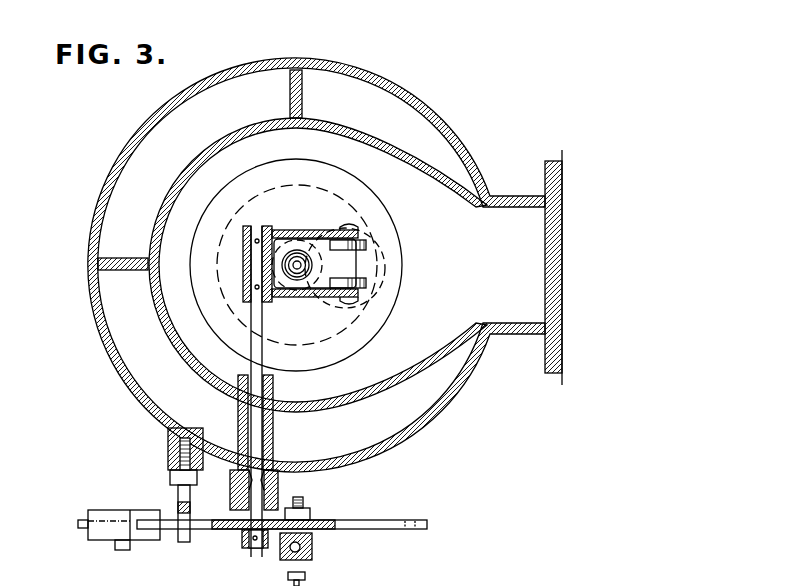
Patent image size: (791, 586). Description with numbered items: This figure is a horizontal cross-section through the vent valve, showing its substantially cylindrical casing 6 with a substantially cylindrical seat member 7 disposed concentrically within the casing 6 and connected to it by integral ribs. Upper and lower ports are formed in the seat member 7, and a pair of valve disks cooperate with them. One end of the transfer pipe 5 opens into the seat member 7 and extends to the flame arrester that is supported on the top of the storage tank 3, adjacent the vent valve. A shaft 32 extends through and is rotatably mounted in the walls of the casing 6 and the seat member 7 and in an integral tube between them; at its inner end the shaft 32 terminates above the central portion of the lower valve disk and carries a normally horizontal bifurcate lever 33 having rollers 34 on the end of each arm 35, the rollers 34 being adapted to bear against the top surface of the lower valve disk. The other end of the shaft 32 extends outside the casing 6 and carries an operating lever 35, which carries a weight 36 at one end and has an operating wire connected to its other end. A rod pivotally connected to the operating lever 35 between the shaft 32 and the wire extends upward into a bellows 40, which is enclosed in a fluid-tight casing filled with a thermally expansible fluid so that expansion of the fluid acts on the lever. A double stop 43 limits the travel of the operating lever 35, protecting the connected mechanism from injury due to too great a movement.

The storage tank 3 is at (268, 430).
The transfer pipe 5 is at (525, 326).
The casing 6 is at (421, 430).
The seat member 7 is at (389, 383).
The shaft 32 is at (250, 420).
The bifurcate lever 33 is at (272, 228).
The rollers 34 is at (366, 285).
The operating lever 35 is at (362, 300).
The weight 36 is at (90, 514).
The bellows 40 is at (265, 541).
The double stop 43 is at (183, 546).